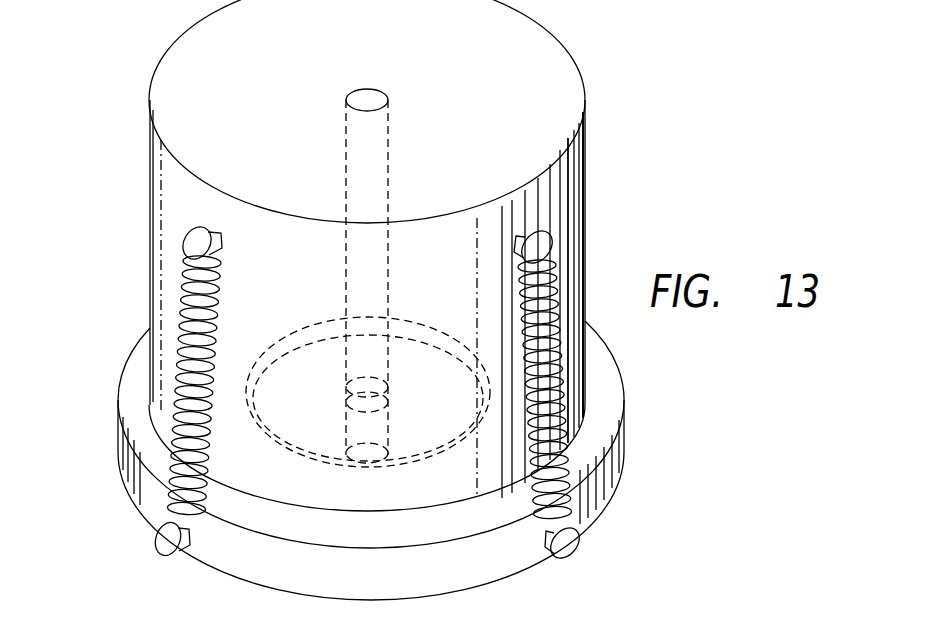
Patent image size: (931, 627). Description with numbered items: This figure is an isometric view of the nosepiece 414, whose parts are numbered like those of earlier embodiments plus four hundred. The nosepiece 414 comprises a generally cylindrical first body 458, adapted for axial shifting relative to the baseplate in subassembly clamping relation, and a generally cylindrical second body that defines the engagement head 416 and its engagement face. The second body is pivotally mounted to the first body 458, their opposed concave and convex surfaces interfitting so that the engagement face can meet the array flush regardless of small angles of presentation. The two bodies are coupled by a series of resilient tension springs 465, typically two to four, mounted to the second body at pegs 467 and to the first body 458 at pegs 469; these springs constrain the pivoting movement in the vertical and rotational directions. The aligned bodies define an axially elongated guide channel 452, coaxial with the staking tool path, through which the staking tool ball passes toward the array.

The nosepiece 414 is at (585, 100).
The engagement head 416 is at (602, 395).
The guide channel 452 is at (386, 97).
The first body 458 is at (215, 96).
The tension springs 465 is at (183, 328).
The pegs 467 is at (578, 535).
The pegs 469 is at (540, 240).